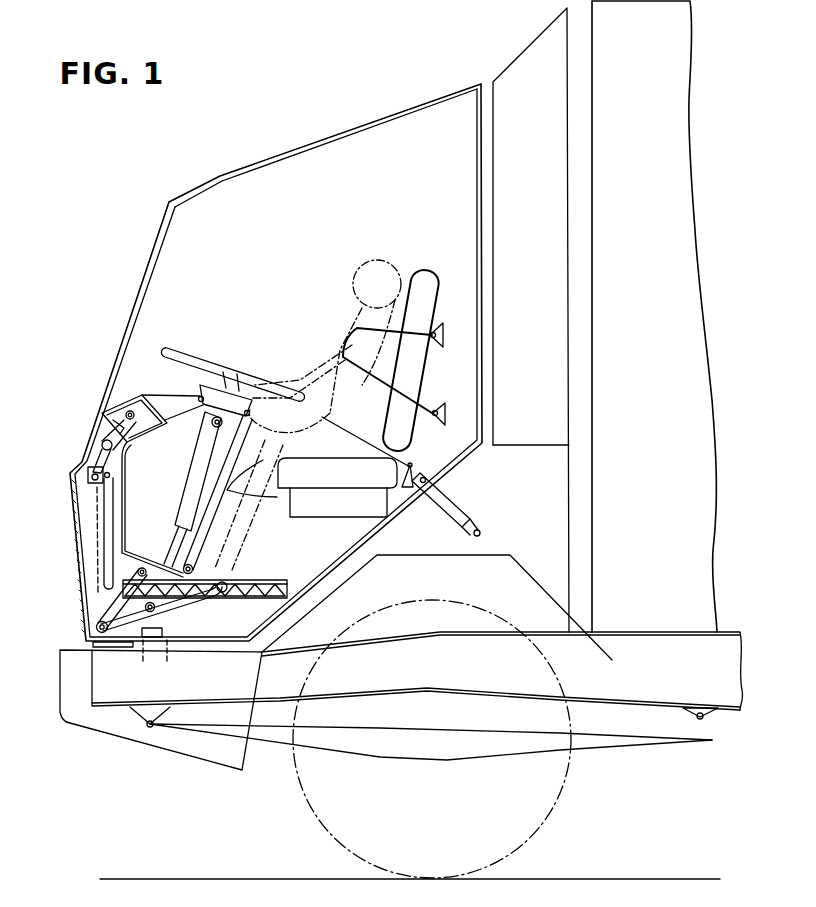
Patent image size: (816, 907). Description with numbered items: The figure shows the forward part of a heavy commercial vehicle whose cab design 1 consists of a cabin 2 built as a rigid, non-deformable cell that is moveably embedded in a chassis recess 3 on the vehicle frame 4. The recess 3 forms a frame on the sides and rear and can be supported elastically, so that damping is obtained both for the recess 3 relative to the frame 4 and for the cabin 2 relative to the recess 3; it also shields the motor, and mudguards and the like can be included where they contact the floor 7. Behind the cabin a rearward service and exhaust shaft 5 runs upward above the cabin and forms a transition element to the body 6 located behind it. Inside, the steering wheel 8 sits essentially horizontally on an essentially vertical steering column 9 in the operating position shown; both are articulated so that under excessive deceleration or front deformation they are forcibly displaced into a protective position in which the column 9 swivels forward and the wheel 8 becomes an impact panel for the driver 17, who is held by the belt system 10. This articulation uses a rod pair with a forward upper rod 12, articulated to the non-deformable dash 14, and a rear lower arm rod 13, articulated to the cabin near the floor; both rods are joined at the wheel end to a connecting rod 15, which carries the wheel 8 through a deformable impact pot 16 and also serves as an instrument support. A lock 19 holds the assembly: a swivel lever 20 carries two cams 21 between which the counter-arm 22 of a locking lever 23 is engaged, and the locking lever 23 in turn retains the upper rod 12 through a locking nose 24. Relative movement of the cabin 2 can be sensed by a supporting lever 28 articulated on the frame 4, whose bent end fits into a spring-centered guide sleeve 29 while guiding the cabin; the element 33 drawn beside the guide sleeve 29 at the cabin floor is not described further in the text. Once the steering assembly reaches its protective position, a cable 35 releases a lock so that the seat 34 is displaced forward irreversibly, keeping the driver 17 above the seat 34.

The cab design 1 is at (83, 628).
The cabin 2 is at (296, 175).
The chassis recess 3 is at (118, 717).
The vehicle frame 4 is at (667, 680).
The service and exhaust shaft 5 is at (546, 300).
The body 6 is at (672, 152).
The floor 7 is at (550, 538).
The steering wheel 8 is at (183, 350).
The steering column 9 is at (200, 462).
The belt system 10 is at (400, 322).
The forward upper rod 12 is at (178, 407).
The rear lower arm rod 13 is at (208, 517).
The dash 14 is at (110, 428).
The connecting rod 15 is at (224, 398).
The impact pot 16 is at (221, 383).
The driver 17 is at (370, 275).
The lock 19 is at (100, 560).
The swivel lever 20 is at (113, 530).
The cams 21 is at (90, 470).
The counter-arm 22 is at (80, 480).
The locking lever 23 is at (100, 465).
The locking nose 24 is at (120, 410).
The supporting lever 28 is at (187, 617).
The guide sleeve 29 is at (265, 590).
The roller 33 is at (228, 595).
The seat 34 is at (432, 275).
The cable 35 is at (258, 500).